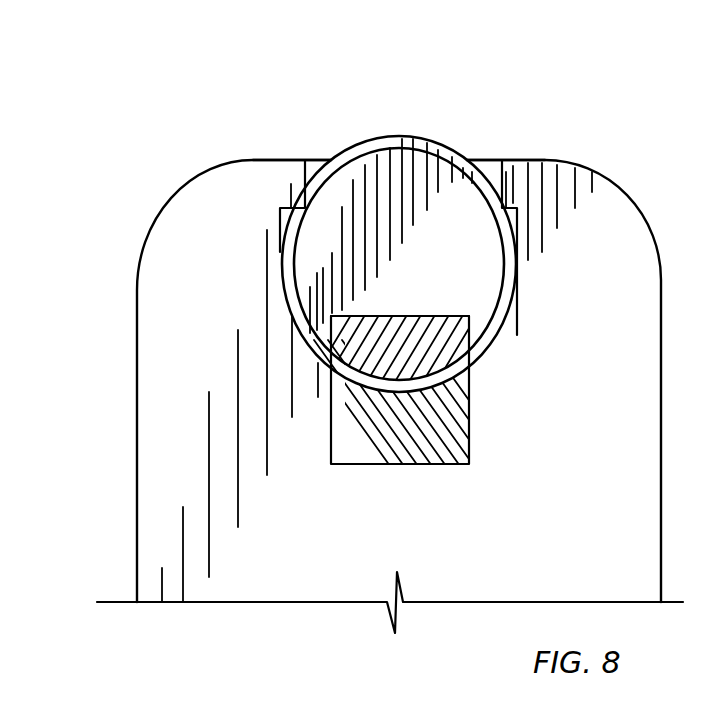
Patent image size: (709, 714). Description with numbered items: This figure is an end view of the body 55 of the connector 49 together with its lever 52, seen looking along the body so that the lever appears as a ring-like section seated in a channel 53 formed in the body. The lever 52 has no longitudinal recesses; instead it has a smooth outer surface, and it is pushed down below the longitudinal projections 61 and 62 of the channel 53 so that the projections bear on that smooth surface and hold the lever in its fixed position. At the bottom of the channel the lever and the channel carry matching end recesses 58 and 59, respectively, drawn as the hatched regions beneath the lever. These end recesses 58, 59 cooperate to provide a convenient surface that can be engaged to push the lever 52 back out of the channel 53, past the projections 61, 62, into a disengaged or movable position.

The connector 49 is at (398, 120).
The lever 52 is at (340, 167).
The channel 53 is at (483, 161).
The body 55 is at (145, 230).
The end recess of the lever 58 is at (453, 345).
The end recess of the channel 59 is at (442, 425).
The longitudinal projection 61 is at (297, 183).
The longitudinal projection 62 is at (502, 187).